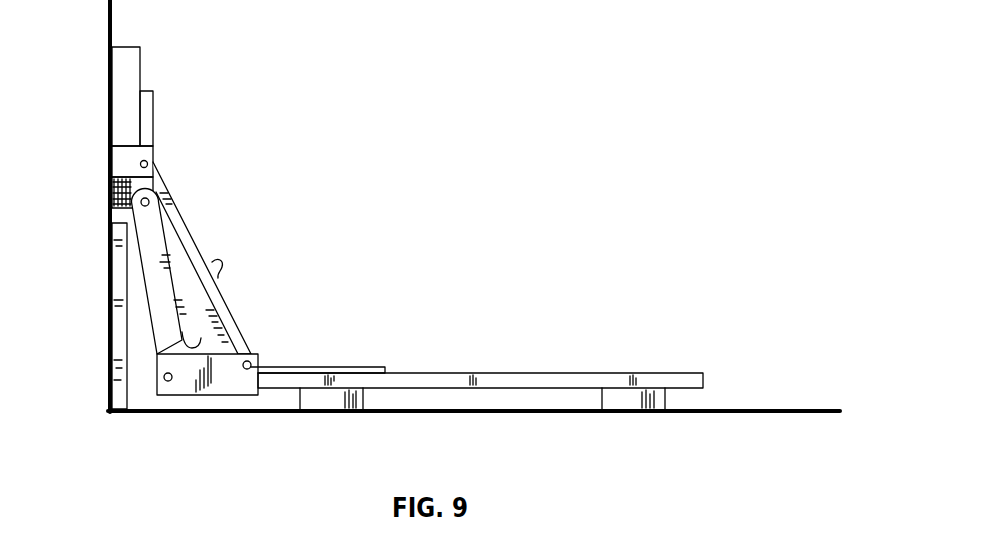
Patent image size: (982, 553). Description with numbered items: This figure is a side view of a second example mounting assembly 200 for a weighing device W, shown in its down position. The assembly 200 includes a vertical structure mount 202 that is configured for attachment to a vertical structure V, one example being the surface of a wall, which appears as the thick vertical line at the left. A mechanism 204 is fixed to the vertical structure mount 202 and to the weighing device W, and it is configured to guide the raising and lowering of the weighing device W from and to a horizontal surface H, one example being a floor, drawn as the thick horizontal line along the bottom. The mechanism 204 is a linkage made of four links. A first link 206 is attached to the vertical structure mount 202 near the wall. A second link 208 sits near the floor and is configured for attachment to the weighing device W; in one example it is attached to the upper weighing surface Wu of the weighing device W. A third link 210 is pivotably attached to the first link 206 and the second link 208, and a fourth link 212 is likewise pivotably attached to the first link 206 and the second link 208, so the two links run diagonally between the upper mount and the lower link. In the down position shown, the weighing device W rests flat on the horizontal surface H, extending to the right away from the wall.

The mounting assembly 200 is at (627, 77).
The vertical structure mount 202 is at (118, 86).
The mechanism 204 is at (215, 150).
The first link 206 is at (152, 139).
The second link 208 is at (233, 382).
The third link 210 is at (189, 226).
The fourth link 212 is at (155, 287).
The vertical structure V is at (110, 216).
The horizontal surface H is at (762, 408).
The weighing device W is at (628, 369).
The upper weighing surface Wu is at (498, 372).